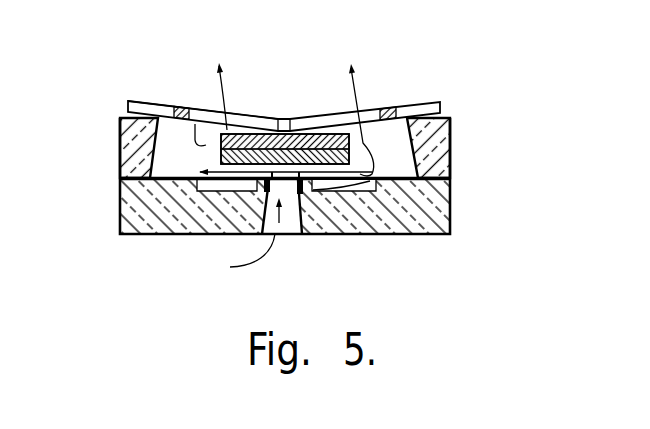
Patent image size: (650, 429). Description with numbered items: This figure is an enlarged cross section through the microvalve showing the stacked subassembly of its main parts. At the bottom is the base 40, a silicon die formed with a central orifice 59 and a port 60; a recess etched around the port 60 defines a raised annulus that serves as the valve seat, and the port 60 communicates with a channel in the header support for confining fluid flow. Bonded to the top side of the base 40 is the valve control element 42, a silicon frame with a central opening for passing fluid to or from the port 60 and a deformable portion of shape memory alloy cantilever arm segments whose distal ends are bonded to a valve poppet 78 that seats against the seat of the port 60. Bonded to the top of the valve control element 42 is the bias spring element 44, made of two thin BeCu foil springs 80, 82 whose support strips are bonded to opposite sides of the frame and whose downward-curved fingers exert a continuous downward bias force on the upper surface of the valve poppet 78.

The base 40 is at (118, 205).
The valve control element 42 is at (118, 150).
The bias spring element 44 is at (182, 102).
The central orifice 59 is at (288, 234).
The port 60 is at (378, 180).
The valve poppet 78 is at (225, 127).
The foil spring 80 is at (124, 96).
The foil spring 82 is at (446, 101).